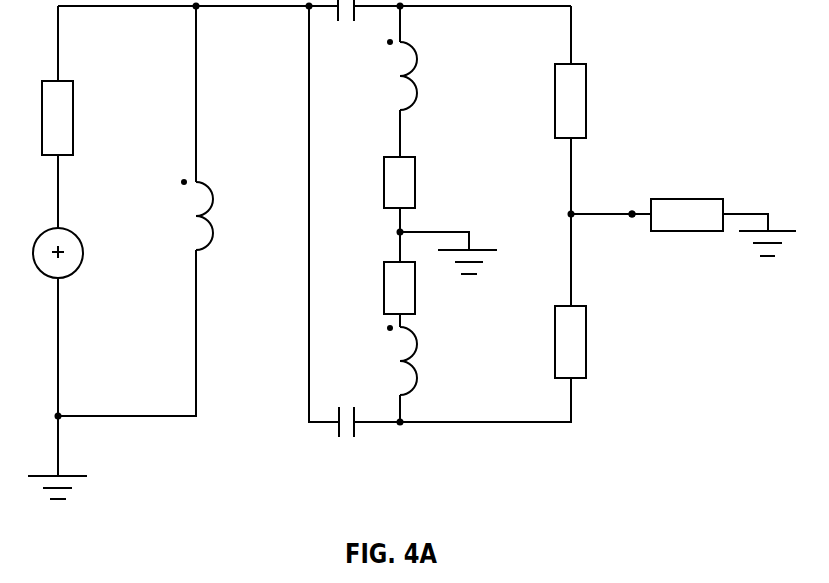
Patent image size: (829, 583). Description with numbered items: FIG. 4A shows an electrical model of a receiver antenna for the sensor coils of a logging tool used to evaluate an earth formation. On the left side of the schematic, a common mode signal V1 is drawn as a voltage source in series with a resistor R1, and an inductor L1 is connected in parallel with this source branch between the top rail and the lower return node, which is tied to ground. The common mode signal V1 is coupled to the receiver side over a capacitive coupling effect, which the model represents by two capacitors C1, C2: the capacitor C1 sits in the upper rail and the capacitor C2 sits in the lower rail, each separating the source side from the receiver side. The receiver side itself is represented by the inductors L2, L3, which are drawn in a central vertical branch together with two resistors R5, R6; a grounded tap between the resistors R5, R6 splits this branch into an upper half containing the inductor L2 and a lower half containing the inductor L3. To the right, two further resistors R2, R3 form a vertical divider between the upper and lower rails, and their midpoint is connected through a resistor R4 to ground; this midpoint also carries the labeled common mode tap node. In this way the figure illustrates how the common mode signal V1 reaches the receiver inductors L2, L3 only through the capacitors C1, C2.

The resistor R1 is at (79, 118).
The resistor R2 is at (589, 101).
The resistor R3 is at (589, 342).
The resistor R4 is at (687, 233).
The resistor R5 is at (417, 182).
The resistor R6 is at (417, 288).
The inductor L1 is at (213, 214).
The inductor L2 is at (419, 74).
The inductor L3 is at (419, 360).
The capacitor C1 is at (346, 27).
The capacitor C2 is at (346, 440).
The common mode signal V1 is at (75, 253).